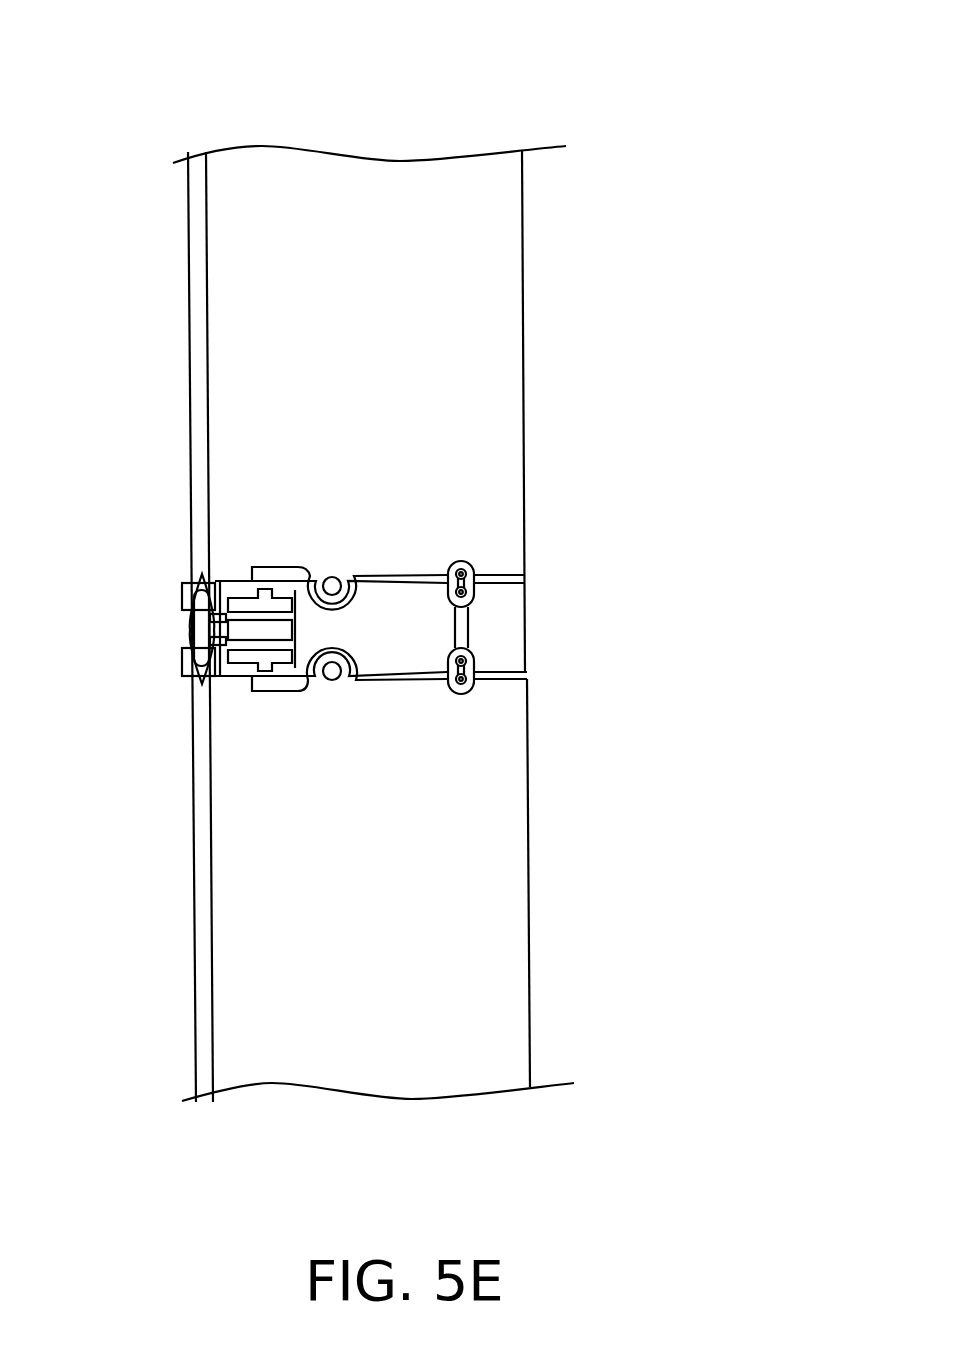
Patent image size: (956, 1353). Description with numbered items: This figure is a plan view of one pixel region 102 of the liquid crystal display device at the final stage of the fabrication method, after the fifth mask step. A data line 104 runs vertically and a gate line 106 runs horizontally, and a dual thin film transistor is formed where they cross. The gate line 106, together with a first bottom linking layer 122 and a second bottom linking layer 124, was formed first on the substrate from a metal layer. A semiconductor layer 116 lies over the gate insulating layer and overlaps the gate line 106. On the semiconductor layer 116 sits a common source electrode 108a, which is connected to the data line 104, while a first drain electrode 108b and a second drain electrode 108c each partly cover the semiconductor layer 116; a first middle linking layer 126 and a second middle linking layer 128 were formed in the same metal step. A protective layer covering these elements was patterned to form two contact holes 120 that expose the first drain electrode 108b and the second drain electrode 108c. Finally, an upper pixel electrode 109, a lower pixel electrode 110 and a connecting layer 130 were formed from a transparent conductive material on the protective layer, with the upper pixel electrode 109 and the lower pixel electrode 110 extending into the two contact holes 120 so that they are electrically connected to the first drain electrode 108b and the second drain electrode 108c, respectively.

The pixel region 102 is at (650, 82).
The data line 104 is at (202, 877).
The gate line 106 is at (500, 645).
The common source electrode 108a is at (282, 630).
The first drain electrode 108b is at (247, 603).
The second drain electrode 108c is at (237, 657).
The upper pixel electrode 109 is at (497, 255).
The lower pixel electrode 110 is at (500, 976).
The semiconductor layer 116 is at (275, 595).
The contact hole 120 is at (332, 586).
The first bottom linking layer 122 is at (466, 570).
The second bottom linking layer 124 is at (473, 685).
The first middle linking layer 126 is at (473, 572).
The second middle linking layer 128 is at (473, 685).
The connecting layer 130 is at (463, 633).